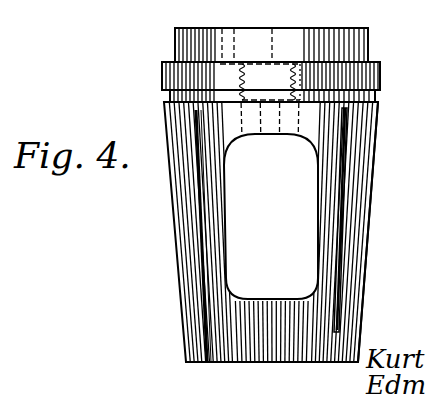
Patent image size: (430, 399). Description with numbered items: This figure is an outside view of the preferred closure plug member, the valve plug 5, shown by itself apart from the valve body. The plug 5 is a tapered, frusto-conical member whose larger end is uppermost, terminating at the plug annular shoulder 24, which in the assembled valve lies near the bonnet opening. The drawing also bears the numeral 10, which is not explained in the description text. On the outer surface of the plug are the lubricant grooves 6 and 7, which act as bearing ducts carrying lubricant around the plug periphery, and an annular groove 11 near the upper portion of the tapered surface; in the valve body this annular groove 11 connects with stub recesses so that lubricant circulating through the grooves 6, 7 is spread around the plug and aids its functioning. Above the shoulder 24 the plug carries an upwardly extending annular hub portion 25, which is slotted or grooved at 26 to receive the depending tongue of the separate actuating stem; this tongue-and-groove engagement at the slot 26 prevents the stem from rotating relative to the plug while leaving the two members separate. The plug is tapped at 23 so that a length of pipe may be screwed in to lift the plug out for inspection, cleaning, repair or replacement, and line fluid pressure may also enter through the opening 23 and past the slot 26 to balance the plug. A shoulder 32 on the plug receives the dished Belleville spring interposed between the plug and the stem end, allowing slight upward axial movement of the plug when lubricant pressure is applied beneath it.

The valve plug 5 is at (374, 215).
The container body 10 is at (310, 167).
The lubricant groove 7 is at (210, 348).
The lubricant groove 6 is at (331, 327).
The annular hub portion 25 is at (178, 36).
The slot 26 is at (360, 58).
The plug annular shoulder 24 is at (162, 65).
The annular groove 11 is at (375, 96).
The tapped opening 23 is at (283, 66).
The shoulder 32 is at (298, 66).